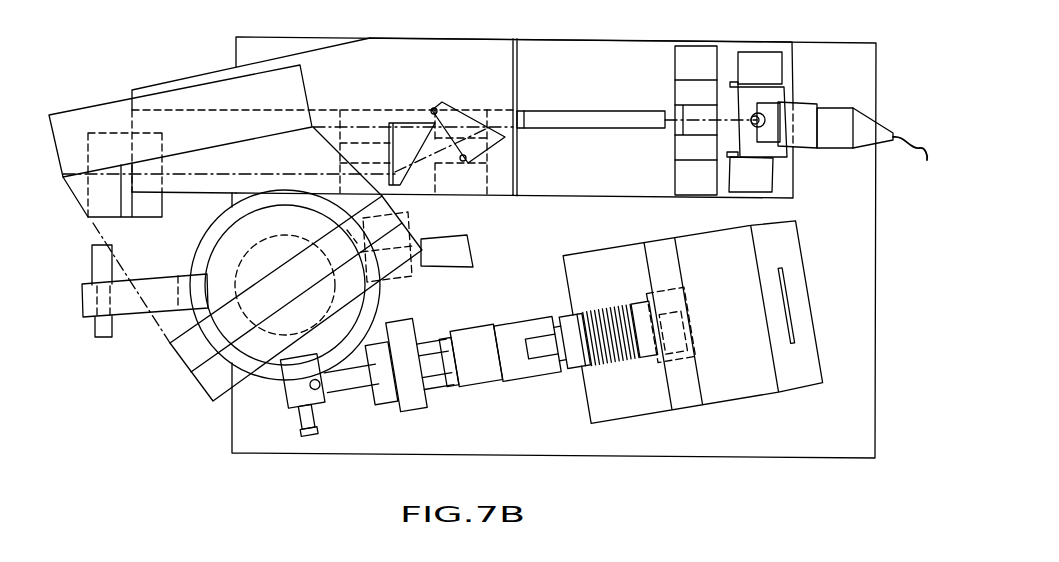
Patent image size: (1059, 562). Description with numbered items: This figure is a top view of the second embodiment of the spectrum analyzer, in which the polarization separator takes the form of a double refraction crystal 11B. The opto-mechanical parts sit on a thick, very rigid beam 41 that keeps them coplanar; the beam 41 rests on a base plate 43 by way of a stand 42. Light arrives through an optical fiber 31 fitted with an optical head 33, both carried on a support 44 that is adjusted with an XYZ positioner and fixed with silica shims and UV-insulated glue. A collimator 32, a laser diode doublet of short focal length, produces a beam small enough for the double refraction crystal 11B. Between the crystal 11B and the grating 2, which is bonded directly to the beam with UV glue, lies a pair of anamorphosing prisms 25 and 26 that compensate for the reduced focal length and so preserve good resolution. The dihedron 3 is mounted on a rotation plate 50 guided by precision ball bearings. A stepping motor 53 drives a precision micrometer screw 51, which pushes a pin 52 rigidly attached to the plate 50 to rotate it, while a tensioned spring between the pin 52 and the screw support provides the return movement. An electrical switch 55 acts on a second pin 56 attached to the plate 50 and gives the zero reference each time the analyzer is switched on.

The grating 2 is at (95, 107).
The dihedron 3 is at (205, 380).
The double refraction crystal 11B is at (573, 110).
The anamorphosing prism 25 is at (443, 105).
The anamorphosing prism 26 is at (410, 123).
The optical fiber 31 is at (907, 140).
The collimator 32 is at (693, 105).
The optical head 33 is at (805, 102).
The beam 41 is at (587, 197).
The stand 42 is at (473, 182).
The base plate 43 is at (853, 265).
The support 44 is at (773, 173).
The rotation plate 50 is at (190, 252).
The micrometer screw 51 is at (483, 330).
The pin 52 is at (322, 398).
The stepping motor 53 is at (610, 370).
The electrical switch 55 is at (100, 260).
The pin 56 is at (132, 312).